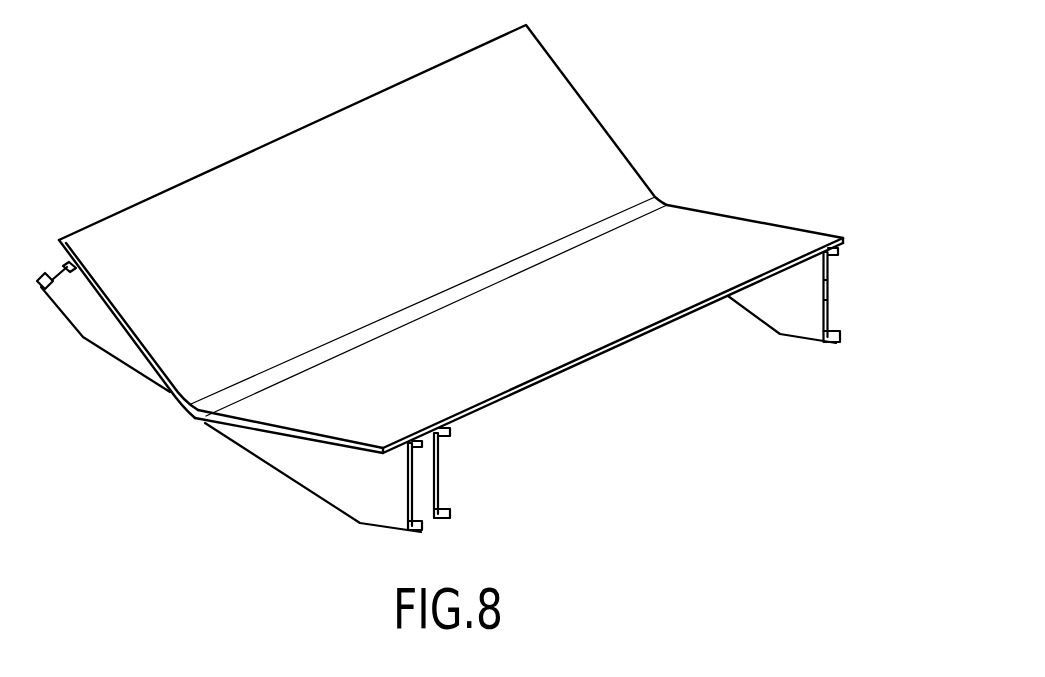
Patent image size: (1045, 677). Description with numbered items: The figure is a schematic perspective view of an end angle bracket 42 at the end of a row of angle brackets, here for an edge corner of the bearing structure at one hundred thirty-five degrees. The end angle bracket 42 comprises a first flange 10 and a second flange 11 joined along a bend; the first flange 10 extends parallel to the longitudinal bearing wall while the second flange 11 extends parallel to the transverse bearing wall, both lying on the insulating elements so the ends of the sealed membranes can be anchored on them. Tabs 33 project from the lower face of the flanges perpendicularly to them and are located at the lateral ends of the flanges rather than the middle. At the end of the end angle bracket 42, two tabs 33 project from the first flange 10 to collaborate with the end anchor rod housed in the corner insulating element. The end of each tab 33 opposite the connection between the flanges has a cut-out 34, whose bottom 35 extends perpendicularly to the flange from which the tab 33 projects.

The first flange 10 is at (777, 247).
The second flange 11 is at (562, 118).
The end angle bracket 42 is at (454, 277).
The tab 33 is at (93, 320).
The cut-out 34 is at (413, 463).
The bottom of the cut-out 35 is at (434, 504).